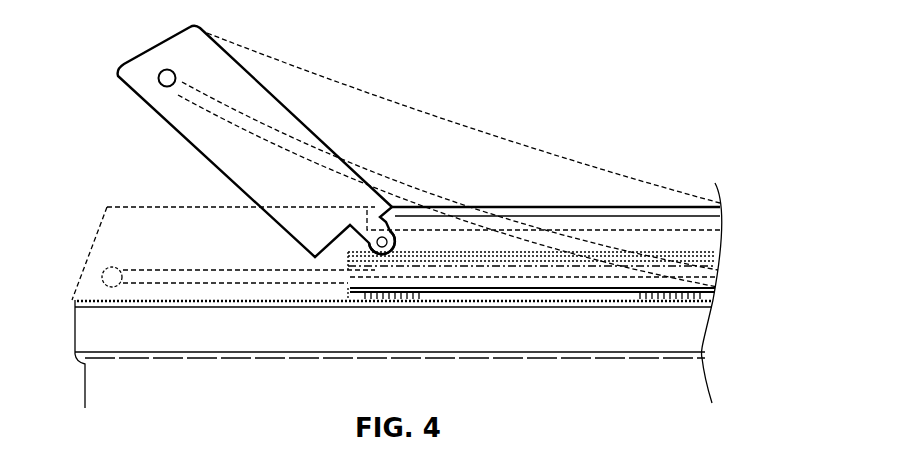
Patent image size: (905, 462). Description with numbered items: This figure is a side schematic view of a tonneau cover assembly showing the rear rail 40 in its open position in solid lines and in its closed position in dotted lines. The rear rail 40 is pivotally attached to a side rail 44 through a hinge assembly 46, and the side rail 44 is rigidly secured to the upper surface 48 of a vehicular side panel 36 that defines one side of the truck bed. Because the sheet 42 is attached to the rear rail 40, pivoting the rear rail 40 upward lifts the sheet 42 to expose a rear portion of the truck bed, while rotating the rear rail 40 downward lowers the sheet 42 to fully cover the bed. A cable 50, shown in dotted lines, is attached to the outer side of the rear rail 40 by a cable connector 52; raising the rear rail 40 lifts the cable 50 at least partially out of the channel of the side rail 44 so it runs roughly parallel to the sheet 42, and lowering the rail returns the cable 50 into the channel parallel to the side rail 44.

The vehicular side panel 36 is at (102, 383).
The rear rail 40 is at (183, 40).
The sheet 42 is at (488, 136).
The side rail 44 is at (650, 233).
The hinge assembly 46 is at (390, 230).
The upper surface 48 is at (91, 300).
The cable 50 is at (287, 133).
The cable connector 52 is at (157, 74).